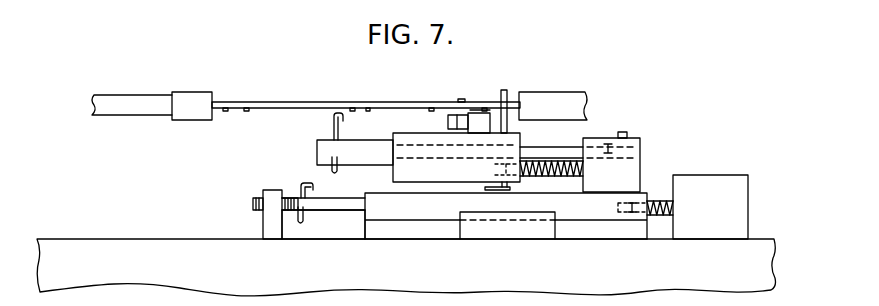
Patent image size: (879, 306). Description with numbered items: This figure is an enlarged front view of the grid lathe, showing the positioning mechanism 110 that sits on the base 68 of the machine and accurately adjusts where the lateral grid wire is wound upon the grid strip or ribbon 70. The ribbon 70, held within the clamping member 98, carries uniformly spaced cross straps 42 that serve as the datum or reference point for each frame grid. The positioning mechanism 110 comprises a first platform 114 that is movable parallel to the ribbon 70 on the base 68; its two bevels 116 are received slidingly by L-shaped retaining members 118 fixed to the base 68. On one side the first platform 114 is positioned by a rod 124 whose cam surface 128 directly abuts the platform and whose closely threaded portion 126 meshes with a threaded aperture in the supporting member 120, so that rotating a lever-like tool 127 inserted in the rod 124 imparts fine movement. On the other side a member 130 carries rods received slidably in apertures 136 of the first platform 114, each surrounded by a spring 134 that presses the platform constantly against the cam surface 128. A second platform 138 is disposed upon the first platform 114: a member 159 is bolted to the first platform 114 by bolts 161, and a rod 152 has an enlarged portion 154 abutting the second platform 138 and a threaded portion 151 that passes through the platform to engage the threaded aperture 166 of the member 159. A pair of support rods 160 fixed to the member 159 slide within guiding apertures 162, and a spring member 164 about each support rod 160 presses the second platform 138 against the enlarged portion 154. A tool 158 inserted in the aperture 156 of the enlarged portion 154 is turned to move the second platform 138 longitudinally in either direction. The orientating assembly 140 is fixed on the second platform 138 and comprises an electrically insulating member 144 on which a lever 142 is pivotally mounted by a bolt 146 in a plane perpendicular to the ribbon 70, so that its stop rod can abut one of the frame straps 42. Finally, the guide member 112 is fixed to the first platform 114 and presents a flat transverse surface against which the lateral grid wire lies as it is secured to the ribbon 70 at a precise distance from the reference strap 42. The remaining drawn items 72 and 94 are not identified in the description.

The cross straps 42 is at (352, 102).
The base 68 is at (763, 248).
The grid strip or ribbon 70 is at (347, 86).
The housing 72 is at (549, 93).
The shaft 94 is at (117, 99).
The clamping member 98 is at (187, 90).
The positioning mechanism 110 is at (96, 228).
The guide member 112 is at (503, 90).
The first platform 114 is at (372, 198).
The bevels 116 is at (396, 232).
The L-shaped retaining members 118 is at (527, 230).
The member 120 is at (268, 190).
The rod 124 is at (317, 212).
The threaded portion 126 is at (255, 205).
The lever-like tool 127 is at (305, 183).
The cam surface 128 is at (364, 205).
The member 130 is at (725, 178).
The spring 134 is at (668, 212).
The apertures 136 is at (618, 222).
The second platform 138 is at (436, 178).
The orientating assembly 140 is at (425, 133).
The lever 142 is at (452, 114).
The member 144 is at (474, 112).
The bolt 146 is at (449, 118).
The threaded portion 151 is at (560, 147).
The rod 152 is at (361, 158).
The enlarged portion 154 is at (362, 141).
The aperture 156 is at (330, 159).
The tool 158 is at (333, 126).
The member 159 is at (641, 138).
The support rods 160 is at (583, 176).
The bolts 161 is at (618, 133).
The guiding apertures 162 is at (493, 167).
The spring member 164 is at (548, 178).
The threaded aperture 166 is at (641, 149).